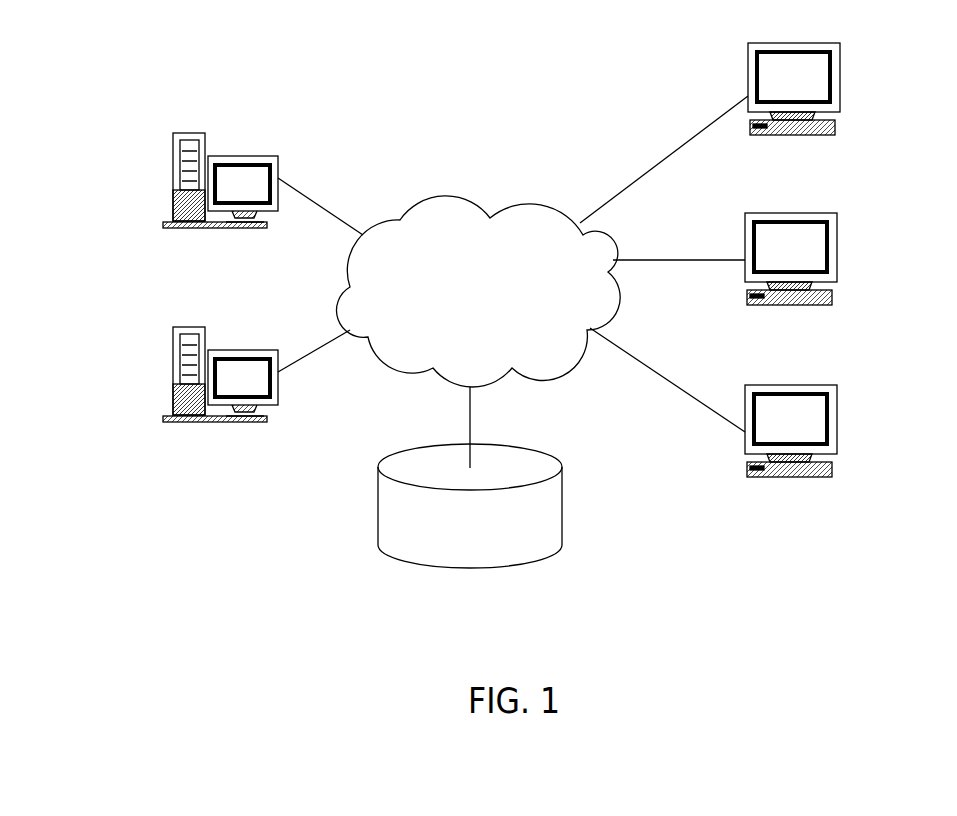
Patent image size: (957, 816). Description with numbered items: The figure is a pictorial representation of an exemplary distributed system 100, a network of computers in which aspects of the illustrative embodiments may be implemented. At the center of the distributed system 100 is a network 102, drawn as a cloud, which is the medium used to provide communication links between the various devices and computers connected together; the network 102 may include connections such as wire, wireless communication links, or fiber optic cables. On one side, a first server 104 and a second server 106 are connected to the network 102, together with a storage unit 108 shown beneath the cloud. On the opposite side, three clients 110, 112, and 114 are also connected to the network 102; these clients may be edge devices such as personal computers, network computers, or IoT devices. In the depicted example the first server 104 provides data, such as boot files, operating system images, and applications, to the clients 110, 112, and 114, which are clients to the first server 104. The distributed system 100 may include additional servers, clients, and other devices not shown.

The distributed system 100 is at (577, 94).
The network 102 is at (443, 200).
The first server 104 is at (172, 180).
The second server 106 is at (170, 375).
The storage unit 108 is at (378, 503).
The client 110 is at (842, 88).
The client 112 is at (838, 260).
The client 114 is at (840, 430).